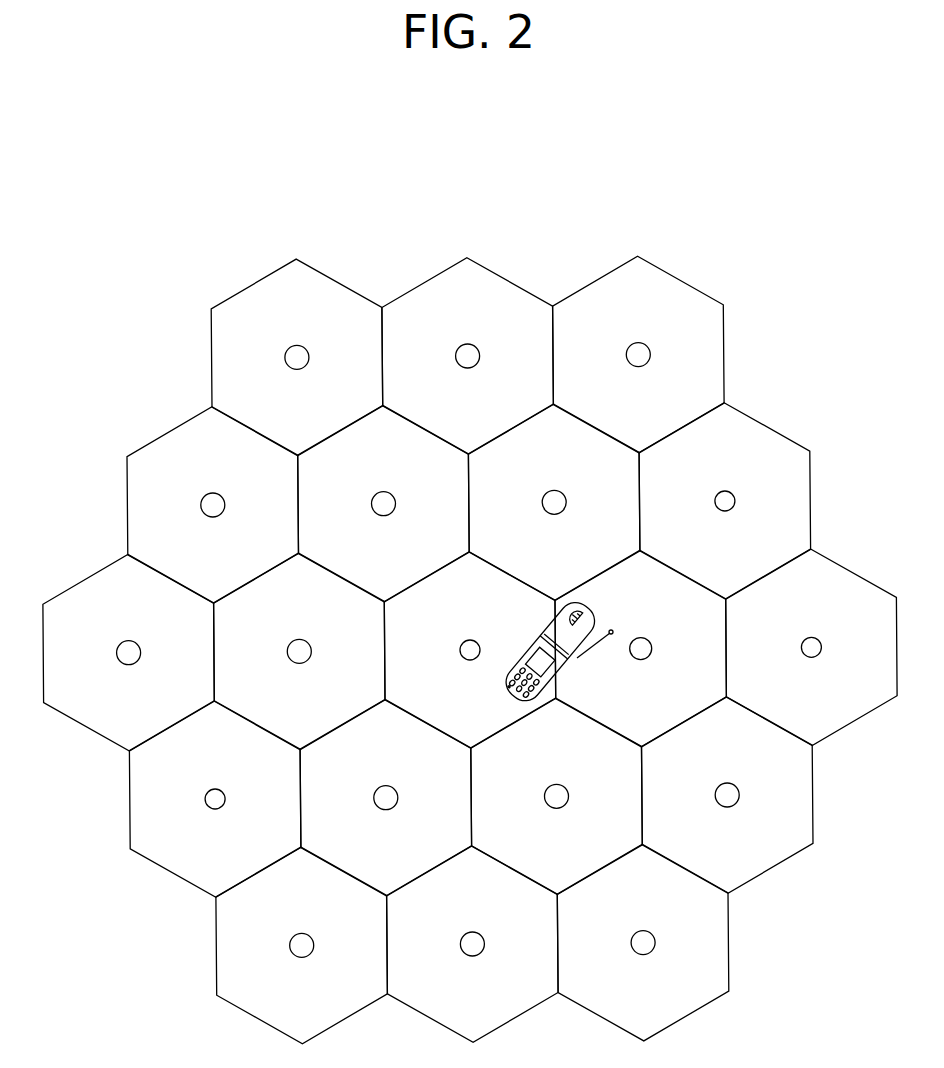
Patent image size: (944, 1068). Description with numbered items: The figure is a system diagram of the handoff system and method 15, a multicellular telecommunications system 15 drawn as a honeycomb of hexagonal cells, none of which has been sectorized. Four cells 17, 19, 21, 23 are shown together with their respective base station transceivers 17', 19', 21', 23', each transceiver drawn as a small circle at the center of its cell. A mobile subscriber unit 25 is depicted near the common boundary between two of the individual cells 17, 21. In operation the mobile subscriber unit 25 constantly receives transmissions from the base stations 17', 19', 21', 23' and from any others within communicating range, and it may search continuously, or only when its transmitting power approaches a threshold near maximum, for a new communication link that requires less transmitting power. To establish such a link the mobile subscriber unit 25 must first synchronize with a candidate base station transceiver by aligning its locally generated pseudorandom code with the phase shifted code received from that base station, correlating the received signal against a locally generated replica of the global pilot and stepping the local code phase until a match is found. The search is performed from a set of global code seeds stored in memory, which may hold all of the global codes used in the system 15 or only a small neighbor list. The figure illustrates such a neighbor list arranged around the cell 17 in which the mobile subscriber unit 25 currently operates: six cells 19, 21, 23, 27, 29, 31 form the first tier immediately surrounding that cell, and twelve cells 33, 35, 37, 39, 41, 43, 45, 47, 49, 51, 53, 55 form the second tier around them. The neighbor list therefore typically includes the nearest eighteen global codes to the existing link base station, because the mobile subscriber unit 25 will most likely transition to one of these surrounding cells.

The multicellular telecommunications system 15 is at (207, 240).
The cell 17 is at (469, 650).
The base station transceiver 17' is at (456, 636).
The cell 19 is at (554, 502).
The base station transceiver 19' is at (555, 483).
The cell 21 is at (640, 648).
The base station transceiver 21' is at (659, 636).
The cell 23 is at (557, 796).
The base station transceiver 23' is at (580, 785).
The mobile subscriber unit 25 is at (547, 641).
The cell 27 is at (399, 874).
The cell 29 is at (286, 727).
The cell 31 is at (370, 580).
The cell 33 is at (481, 432).
The cell 35 is at (625, 431).
The cell 37 is at (738, 577).
The cell 39 is at (798, 723).
The cell 41 is at (714, 871).
The cell 43 is at (630, 1019).
The cell 45 is at (459, 1020).
The cell 47 is at (315, 1021).
The cell 49 is at (202, 875).
The cell 51 is at (142, 729).
The cell 53 is at (226, 581).
The cell 55 is at (310, 433).